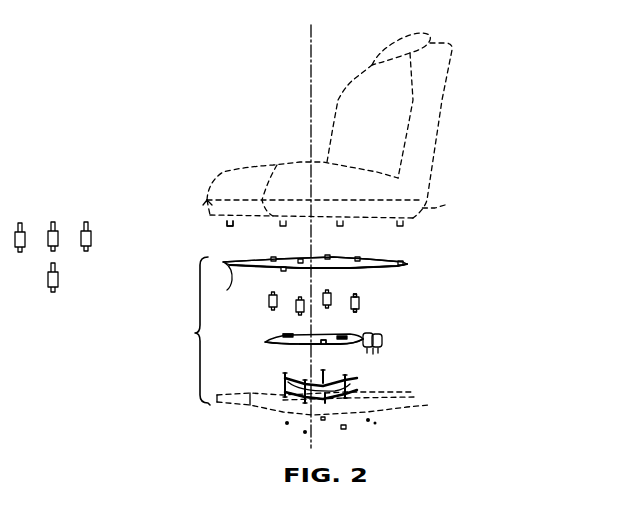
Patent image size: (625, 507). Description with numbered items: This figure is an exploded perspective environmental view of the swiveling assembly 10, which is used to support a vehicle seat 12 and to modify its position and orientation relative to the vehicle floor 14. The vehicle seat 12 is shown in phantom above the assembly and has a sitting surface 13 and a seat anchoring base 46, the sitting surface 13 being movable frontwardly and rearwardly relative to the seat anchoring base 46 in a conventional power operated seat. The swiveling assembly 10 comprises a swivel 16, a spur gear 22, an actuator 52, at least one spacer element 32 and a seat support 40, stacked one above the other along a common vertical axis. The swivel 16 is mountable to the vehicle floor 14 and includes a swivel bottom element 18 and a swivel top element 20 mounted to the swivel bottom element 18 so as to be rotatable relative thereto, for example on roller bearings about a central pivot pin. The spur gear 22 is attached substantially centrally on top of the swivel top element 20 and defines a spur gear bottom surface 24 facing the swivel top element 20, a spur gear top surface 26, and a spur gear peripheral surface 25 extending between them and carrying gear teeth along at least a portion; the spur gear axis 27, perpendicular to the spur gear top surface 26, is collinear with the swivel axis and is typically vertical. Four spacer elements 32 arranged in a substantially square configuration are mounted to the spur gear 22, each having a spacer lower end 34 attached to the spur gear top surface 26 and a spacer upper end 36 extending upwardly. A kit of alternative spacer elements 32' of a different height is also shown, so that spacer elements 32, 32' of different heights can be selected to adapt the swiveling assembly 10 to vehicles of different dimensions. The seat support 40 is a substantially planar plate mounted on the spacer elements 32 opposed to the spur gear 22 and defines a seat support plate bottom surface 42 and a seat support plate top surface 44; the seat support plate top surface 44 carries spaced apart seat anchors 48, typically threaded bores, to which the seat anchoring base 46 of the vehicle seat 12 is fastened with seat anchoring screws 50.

The swiveling assembly 10 is at (336, 27).
The spur gear axis 27 is at (343, 226).
The vehicle seat 12 is at (337, 101).
The sitting surface 13 is at (278, 162).
The vehicle floor 14 is at (430, 401).
The swivel 16 is at (280, 378).
The swivel bottom element 18 is at (347, 390).
The swivel top element 20 is at (350, 382).
The spur gear 22 is at (263, 342).
The spur gear bottom surface 24 is at (287, 345).
The spur gear peripheral surface 25 is at (317, 344).
The spur gear top surface 26 is at (282, 335).
The spacer element 32 is at (359, 311).
The alternative spacer element 32' is at (72, 258).
The spacer lower end 34 is at (358, 308).
The spacer upper end 36 is at (358, 294).
The seat support 40 is at (402, 260).
The seat support plate bottom surface 42 is at (378, 267).
The seat support plate top surface 44 is at (372, 264).
The seat anchoring base 46 is at (443, 199).
The seat anchor 48 is at (218, 287).
The seat anchoring screw 50 is at (230, 227).
The actuator 52 is at (383, 343).